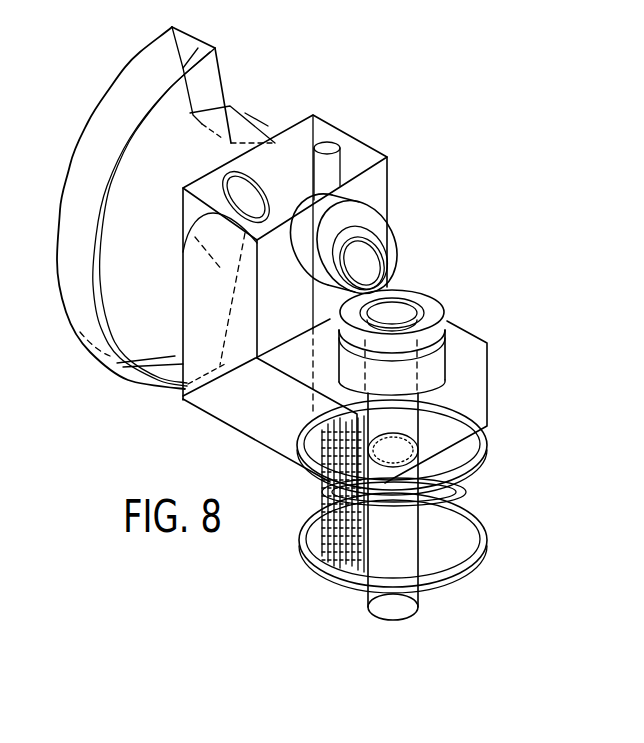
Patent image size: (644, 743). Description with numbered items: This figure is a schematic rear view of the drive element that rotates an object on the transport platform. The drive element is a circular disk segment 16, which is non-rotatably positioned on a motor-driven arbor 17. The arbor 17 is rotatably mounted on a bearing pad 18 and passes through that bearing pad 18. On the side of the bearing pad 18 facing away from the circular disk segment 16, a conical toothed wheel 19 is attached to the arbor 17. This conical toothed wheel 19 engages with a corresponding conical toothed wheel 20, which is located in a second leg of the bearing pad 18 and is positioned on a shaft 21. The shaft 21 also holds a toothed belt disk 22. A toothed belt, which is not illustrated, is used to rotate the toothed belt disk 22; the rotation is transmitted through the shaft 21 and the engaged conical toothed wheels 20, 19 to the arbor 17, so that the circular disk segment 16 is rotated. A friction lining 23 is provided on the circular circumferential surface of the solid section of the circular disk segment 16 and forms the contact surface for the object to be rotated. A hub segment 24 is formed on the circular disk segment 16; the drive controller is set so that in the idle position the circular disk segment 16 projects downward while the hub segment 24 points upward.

The circular disk segment 16 is at (222, 80).
The arbor 17 is at (368, 265).
The bearing pad 18 is at (257, 405).
The conical toothed wheel 19 is at (368, 225).
The conical toothed wheel 20 is at (430, 328).
The shaft 21 is at (395, 308).
The toothed belt disk 22 is at (462, 494).
The friction lining 23 is at (113, 117).
The hub segment 24 is at (255, 132).